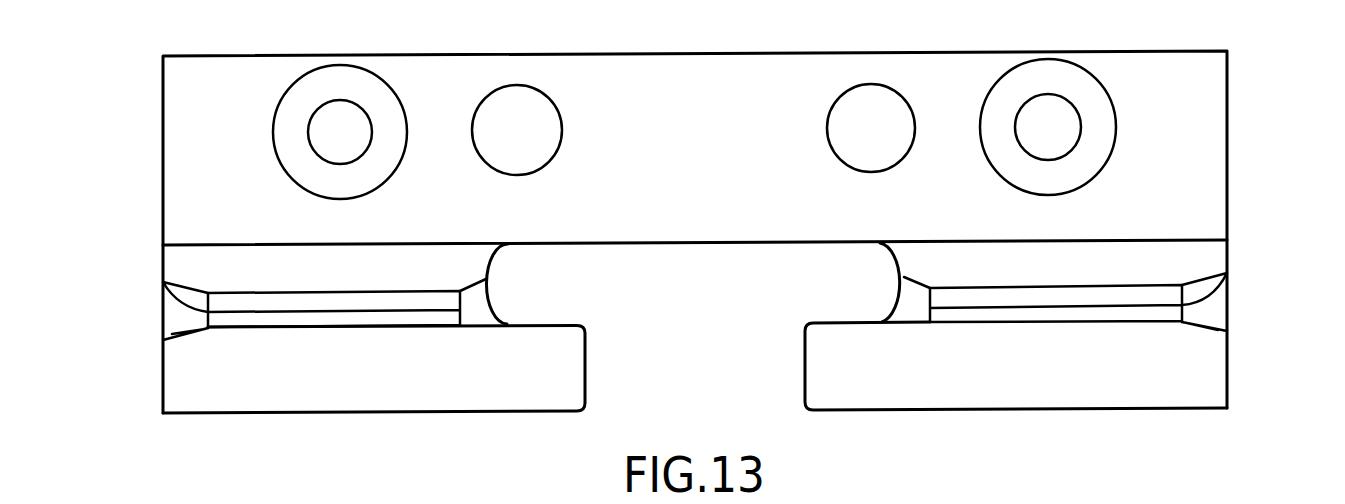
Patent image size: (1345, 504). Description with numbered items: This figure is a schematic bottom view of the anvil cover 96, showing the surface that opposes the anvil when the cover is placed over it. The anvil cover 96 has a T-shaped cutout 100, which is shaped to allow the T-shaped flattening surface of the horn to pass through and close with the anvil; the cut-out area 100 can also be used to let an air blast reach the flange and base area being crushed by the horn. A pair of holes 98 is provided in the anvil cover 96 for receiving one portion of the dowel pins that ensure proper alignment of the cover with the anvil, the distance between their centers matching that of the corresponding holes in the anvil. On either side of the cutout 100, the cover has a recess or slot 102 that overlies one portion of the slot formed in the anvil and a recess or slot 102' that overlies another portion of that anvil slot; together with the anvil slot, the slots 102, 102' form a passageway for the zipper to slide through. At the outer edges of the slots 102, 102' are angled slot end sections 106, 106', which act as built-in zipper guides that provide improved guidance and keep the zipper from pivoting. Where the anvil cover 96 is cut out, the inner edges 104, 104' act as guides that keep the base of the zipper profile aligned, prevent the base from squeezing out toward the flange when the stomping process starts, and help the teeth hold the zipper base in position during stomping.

The anvil cover 96 is at (1228, 195).
The holes 98 is at (525, 117).
The T-shaped cutout 100 is at (698, 346).
The recess or slot 102 is at (1016, 385).
The recess or slot 102' is at (374, 386).
The inner edge 104 is at (1004, 282).
The inner edge 104' is at (388, 286).
The angled slot end section 106 is at (1242, 307).
The angled slot end section 106' is at (143, 316).